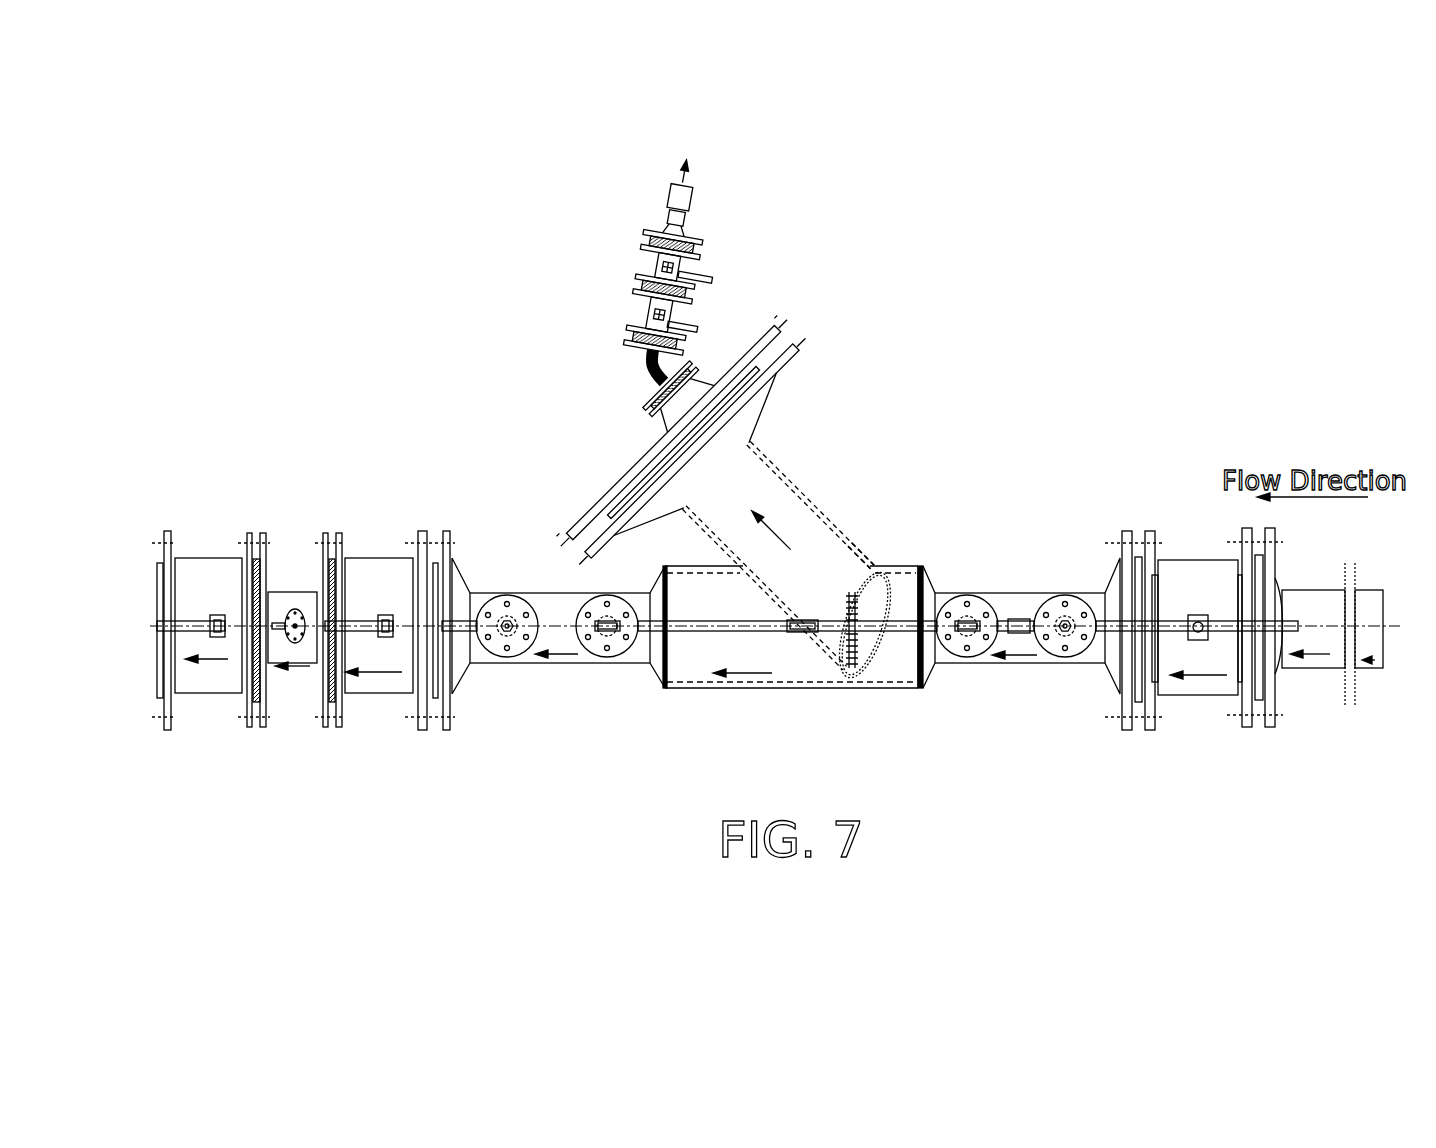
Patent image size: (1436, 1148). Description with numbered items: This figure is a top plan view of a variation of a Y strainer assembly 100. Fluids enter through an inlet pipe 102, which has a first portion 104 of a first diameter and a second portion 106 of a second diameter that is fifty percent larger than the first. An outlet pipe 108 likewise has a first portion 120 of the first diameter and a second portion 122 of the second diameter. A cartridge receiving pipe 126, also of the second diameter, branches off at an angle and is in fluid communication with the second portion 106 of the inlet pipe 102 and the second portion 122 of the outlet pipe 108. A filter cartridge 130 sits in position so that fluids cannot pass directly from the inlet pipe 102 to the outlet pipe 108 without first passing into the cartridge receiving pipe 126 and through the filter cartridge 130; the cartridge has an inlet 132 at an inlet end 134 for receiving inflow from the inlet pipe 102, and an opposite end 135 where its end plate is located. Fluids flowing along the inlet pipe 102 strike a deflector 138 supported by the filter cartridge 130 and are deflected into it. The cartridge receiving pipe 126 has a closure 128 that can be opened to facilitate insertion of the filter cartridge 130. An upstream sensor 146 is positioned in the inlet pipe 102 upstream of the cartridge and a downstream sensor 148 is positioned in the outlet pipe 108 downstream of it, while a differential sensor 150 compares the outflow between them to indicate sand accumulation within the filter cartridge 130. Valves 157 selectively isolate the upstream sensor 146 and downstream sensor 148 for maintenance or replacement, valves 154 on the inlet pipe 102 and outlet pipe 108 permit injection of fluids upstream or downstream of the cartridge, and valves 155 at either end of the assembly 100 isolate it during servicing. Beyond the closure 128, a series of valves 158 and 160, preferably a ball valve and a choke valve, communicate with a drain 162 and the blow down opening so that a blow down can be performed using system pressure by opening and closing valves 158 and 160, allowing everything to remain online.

The Y strainer assembly 100 is at (1164, 259).
The inlet pipe 102 is at (1078, 665).
The first portion of inlet pipe 104 is at (1080, 593).
The second portion of inlet pipe 106 is at (910, 688).
The outlet pipe 108 is at (528, 596).
The first portion of outlet pipe 120 is at (570, 667).
The second portion of outlet pipe 122 is at (685, 688).
The cartridge receiving pipe 126 is at (706, 465).
The closure 128 is at (672, 431).
The filter cartridge 130 is at (796, 555).
The inlet 132 is at (882, 594).
The inlet end 134 is at (861, 556).
The opposite end 135 is at (689, 448).
The deflector 138 is at (840, 668).
The upstream sensor 146 is at (970, 630).
The downstream sensor 148 is at (605, 633).
The differential sensor 150 is at (807, 632).
The valves 154 is at (507, 652).
The valves 155 is at (375, 683).
The valves 157 is at (622, 645).
The valve 158 is at (650, 325).
The valve 160 is at (657, 265).
The drain 162 is at (693, 203).